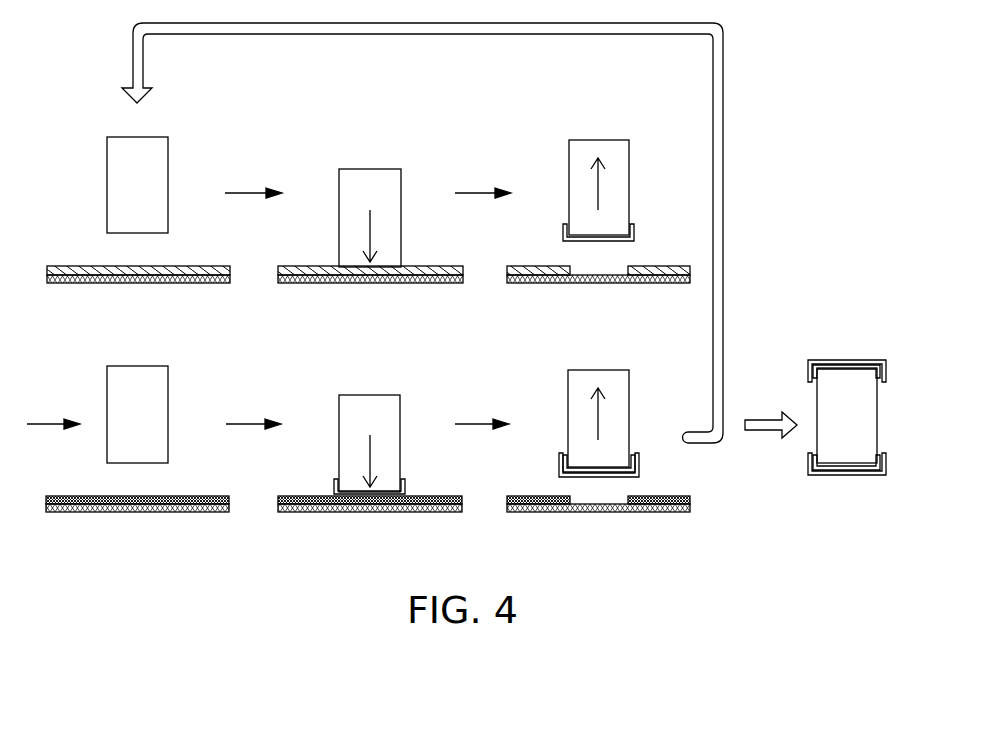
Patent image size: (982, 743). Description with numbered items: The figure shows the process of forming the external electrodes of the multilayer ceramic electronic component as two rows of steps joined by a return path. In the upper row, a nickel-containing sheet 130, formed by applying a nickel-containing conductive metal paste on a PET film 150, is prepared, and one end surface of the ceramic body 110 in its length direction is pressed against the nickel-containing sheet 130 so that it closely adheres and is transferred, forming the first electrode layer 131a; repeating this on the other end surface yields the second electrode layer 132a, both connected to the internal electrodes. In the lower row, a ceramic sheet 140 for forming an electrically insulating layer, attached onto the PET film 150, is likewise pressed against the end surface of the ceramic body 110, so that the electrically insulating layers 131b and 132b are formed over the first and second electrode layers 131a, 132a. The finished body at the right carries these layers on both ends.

The ceramic body 110 is at (166, 153).
The nickel-containing sheet 130 is at (73, 266).
The polyethylene terephthalate (PET) film 150 is at (73, 283).
The ceramic sheet for forming an electrically insulating layer 140 is at (228, 500).
The first electrode layer 131a is at (635, 230).
The electrically insulating layer 131b is at (640, 475).
The second electrode layer 132a is at (813, 362).
The electrically insulating layer 132b is at (858, 360).